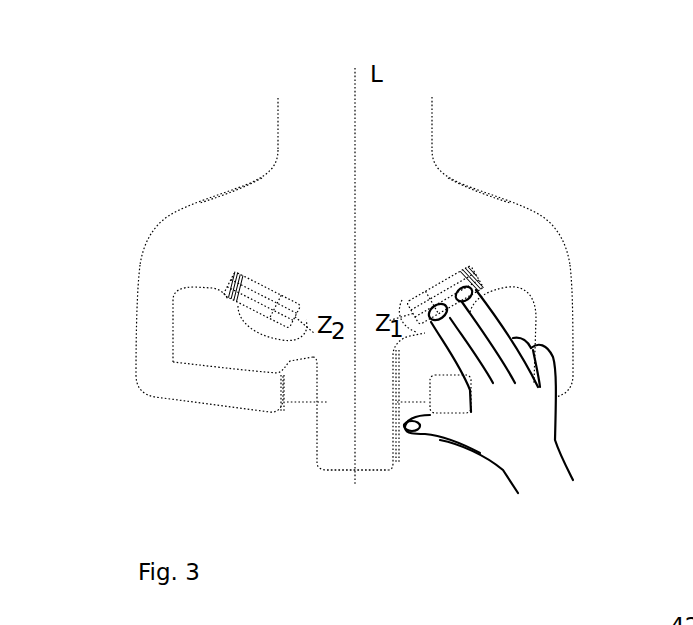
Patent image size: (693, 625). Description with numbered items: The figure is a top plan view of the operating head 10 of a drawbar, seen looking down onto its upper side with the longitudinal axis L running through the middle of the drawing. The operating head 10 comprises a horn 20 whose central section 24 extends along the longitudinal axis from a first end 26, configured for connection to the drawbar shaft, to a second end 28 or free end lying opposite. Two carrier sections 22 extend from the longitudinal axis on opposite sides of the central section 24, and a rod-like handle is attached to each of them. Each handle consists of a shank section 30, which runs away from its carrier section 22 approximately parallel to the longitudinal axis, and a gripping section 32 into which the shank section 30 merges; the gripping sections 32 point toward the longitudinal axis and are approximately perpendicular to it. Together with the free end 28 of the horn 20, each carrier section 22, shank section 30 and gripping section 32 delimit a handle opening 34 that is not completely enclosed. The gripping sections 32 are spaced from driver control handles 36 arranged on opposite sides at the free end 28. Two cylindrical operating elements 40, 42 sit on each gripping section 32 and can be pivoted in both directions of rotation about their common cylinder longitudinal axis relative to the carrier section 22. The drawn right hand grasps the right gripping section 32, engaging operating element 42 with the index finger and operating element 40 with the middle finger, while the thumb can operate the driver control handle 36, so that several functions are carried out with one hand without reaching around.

The operating head 10 is at (148, 204).
The horn 20 is at (396, 173).
The carrier section 22 is at (268, 257).
The central section 24 is at (340, 250).
The first end 26 is at (333, 115).
The second end 28 is at (374, 453).
The shank section 30 is at (155, 326).
The gripping section 32 is at (207, 388).
The handle opening 34 is at (193, 312).
The driver control handle 36 is at (408, 392).
The operating element 40 is at (237, 313).
The operating element 42 is at (272, 327).